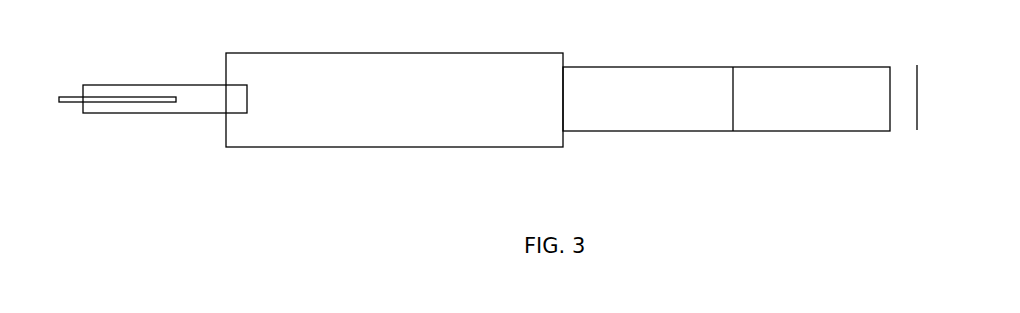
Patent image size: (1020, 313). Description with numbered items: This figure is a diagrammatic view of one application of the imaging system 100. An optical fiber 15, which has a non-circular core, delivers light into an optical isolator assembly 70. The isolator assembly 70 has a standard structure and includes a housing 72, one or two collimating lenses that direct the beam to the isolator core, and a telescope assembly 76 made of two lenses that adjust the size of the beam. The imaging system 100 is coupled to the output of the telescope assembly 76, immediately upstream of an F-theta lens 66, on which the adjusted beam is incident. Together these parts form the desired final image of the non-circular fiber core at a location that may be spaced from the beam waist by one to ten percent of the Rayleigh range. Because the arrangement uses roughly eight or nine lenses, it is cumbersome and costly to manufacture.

The optical fiber 15 is at (63, 103).
The F-theta lens 66 is at (912, 82).
The optical isolator assembly 70 is at (559, 172).
The housing 72 is at (430, 153).
The telescope assembly 76 is at (717, 80).
The imaging system 100 is at (832, 104).